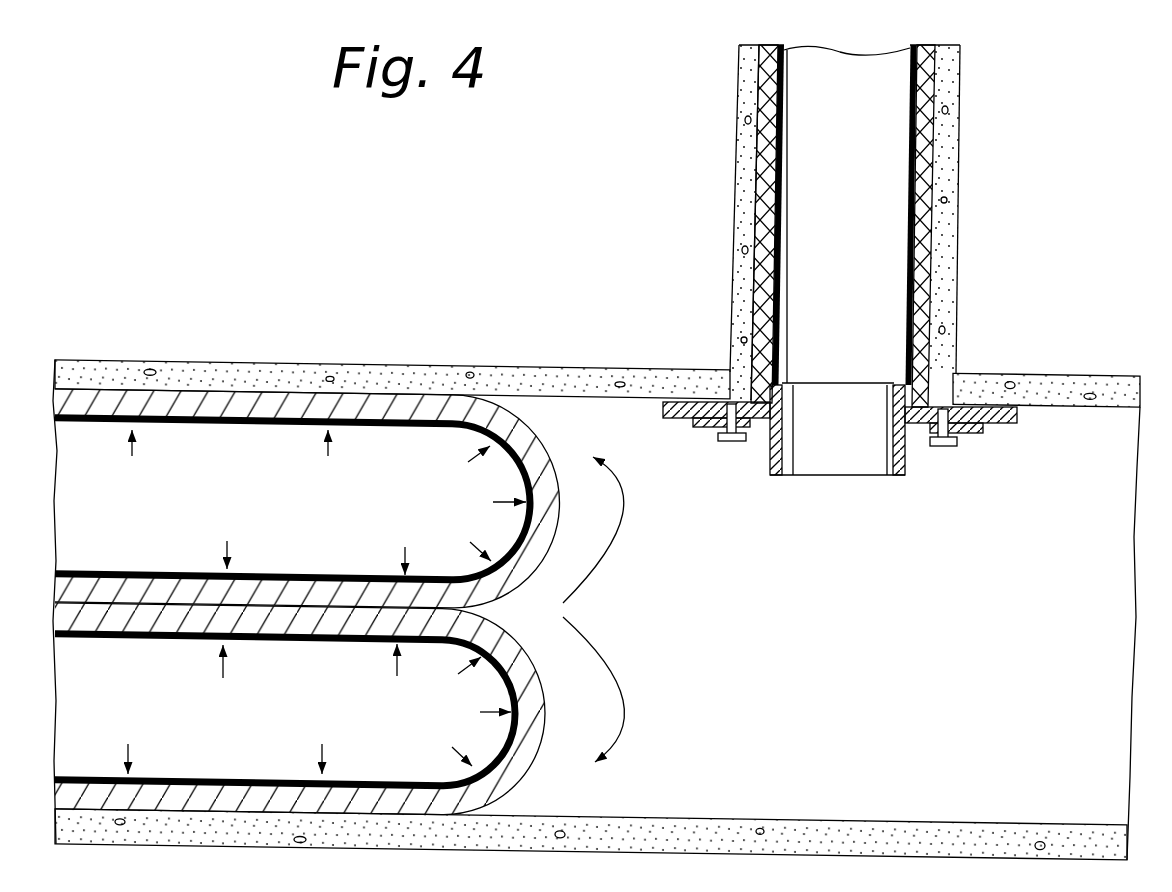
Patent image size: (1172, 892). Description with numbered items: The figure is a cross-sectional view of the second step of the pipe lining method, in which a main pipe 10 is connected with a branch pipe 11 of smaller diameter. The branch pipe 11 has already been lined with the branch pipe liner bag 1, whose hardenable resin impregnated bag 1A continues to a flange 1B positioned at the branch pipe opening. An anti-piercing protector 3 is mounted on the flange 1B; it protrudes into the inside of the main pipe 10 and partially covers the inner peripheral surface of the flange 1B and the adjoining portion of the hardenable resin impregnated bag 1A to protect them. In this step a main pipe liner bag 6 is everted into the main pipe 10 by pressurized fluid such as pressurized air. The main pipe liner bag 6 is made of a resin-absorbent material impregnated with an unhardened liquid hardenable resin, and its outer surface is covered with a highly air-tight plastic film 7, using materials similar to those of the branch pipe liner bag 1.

The branch pipe liner bag 1 is at (784, 252).
The hardenable resin impregnated bag 1A is at (907, 308).
The flange 1B is at (1003, 432).
The anti-piercing protector 3 is at (906, 477).
The main pipe liner bag 6 is at (557, 457).
The plastic film 7 is at (367, 427).
The main pipe 10 is at (1058, 376).
The branch pipe 11 is at (957, 277).